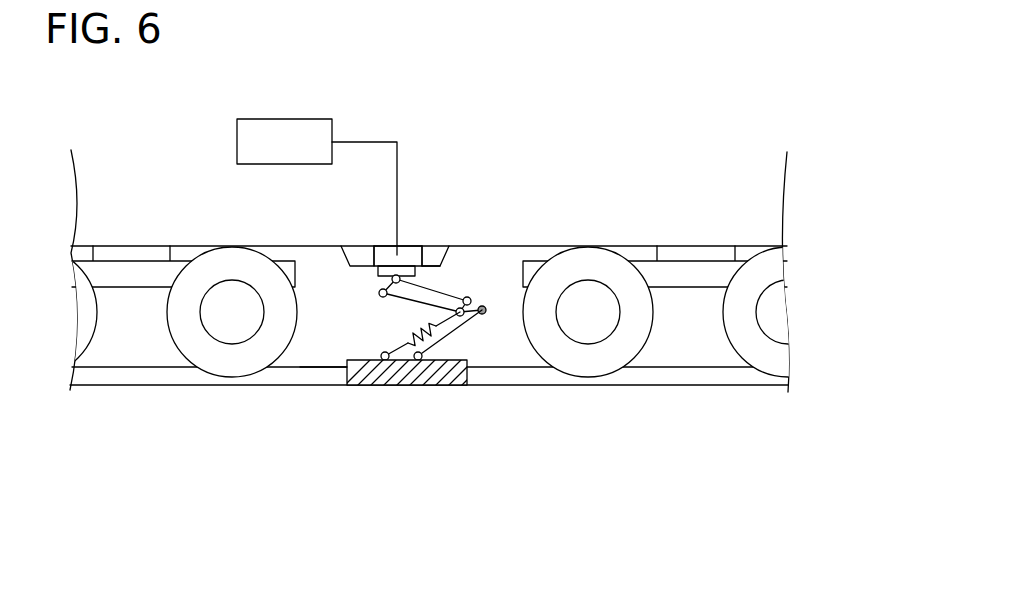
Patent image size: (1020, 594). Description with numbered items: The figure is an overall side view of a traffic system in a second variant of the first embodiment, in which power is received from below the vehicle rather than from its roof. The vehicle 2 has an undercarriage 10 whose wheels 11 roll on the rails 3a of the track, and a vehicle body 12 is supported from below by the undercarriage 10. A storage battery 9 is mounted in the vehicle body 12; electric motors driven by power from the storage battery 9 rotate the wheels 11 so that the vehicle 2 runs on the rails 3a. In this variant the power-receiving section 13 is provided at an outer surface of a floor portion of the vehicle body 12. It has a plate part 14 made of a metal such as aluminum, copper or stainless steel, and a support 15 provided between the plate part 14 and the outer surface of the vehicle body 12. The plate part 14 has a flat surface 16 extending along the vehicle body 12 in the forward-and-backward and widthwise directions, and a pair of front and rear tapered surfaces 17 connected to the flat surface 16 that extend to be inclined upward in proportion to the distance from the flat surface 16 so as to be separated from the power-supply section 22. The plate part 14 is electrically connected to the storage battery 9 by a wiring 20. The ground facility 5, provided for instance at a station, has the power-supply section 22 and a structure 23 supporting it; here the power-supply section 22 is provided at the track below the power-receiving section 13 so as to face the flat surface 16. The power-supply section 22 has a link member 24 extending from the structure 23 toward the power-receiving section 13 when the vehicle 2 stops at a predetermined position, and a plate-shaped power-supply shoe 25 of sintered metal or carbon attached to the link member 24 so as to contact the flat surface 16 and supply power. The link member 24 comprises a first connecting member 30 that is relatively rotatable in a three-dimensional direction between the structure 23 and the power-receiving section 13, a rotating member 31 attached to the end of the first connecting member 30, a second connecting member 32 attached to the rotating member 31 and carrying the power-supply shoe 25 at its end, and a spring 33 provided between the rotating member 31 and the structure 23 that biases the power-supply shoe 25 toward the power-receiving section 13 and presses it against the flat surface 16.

The vehicle 2 is at (683, 83).
The rails 3a is at (714, 373).
The ground facility 5 is at (353, 387).
The storage battery 9 is at (306, 128).
The undercarriage 10 is at (421, 300).
The wheels 11 is at (235, 367).
The vehicle body 12 is at (747, 183).
The power-receiving section 13 is at (400, 327).
The plate part 14 is at (452, 234).
The support 15 is at (383, 253).
The flat surface 16 is at (435, 268).
The tapered surfaces 17 is at (347, 253).
The wiring 20 is at (400, 153).
The power-supply section 22 is at (428, 234).
The structure 23 is at (388, 384).
The link member 24 is at (473, 399).
The power-supply shoe 25 is at (405, 268).
The first connecting member 30 is at (457, 335).
The rotating member 31 is at (463, 316).
The second connecting member 32 is at (484, 314).
The spring 33 is at (433, 336).